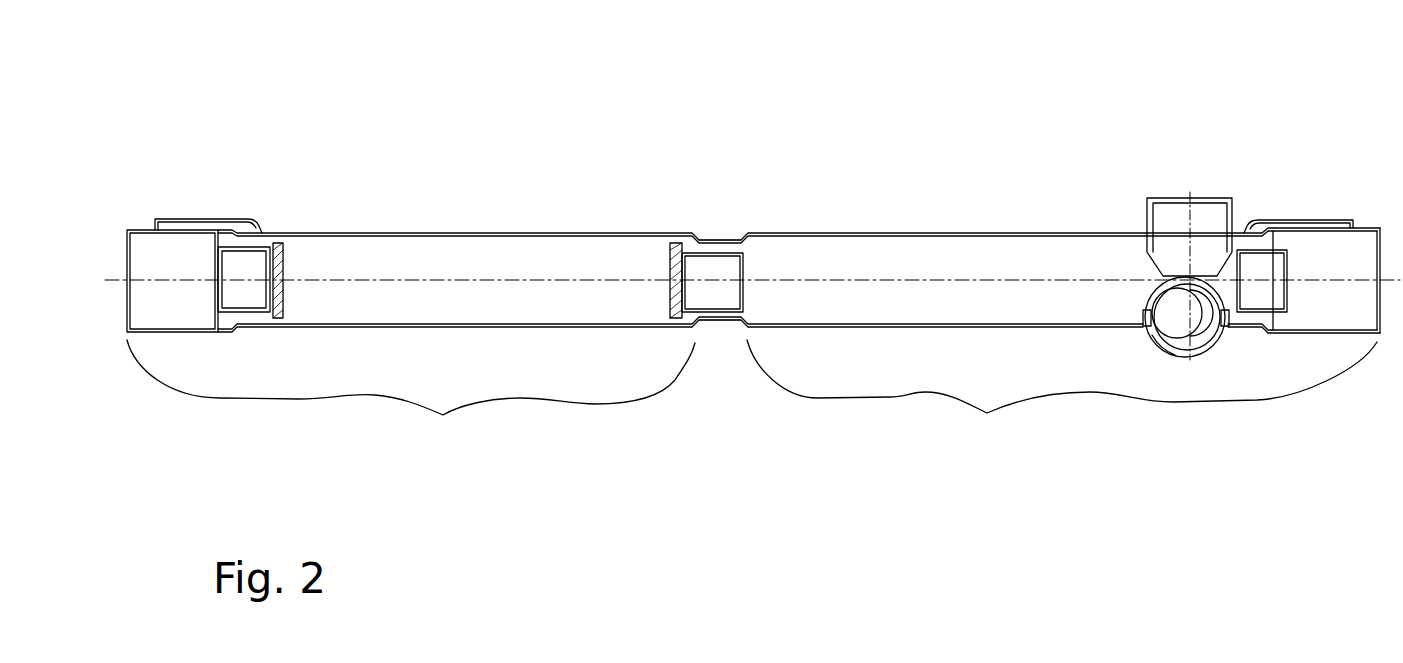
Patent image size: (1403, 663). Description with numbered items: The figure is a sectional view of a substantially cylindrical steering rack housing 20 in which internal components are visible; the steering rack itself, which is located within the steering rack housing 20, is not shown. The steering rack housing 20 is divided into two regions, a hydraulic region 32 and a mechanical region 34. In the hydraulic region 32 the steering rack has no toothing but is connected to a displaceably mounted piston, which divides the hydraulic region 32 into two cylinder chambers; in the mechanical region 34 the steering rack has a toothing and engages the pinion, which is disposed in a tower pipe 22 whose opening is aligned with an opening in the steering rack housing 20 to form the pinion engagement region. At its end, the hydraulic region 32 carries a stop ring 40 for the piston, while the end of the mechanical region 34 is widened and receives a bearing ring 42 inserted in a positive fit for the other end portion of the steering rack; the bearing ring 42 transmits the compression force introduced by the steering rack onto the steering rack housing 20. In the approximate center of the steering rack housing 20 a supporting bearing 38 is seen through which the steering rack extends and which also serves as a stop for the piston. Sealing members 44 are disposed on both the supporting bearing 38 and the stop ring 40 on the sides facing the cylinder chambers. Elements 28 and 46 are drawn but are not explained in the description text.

The steering rack housing 20 is at (537, 187).
The tower pipe 22 is at (1192, 350).
The valve housing 28 is at (1230, 226).
The hydraulic region 32 is at (411, 394).
The mechanical region 34 is at (1062, 395).
The supporting bearing 38 is at (698, 250).
The stop ring 40 is at (228, 245).
The bearing ring 42 is at (1257, 248).
The sealing members 44 is at (280, 246).
The reduced wall section 46 is at (730, 240).